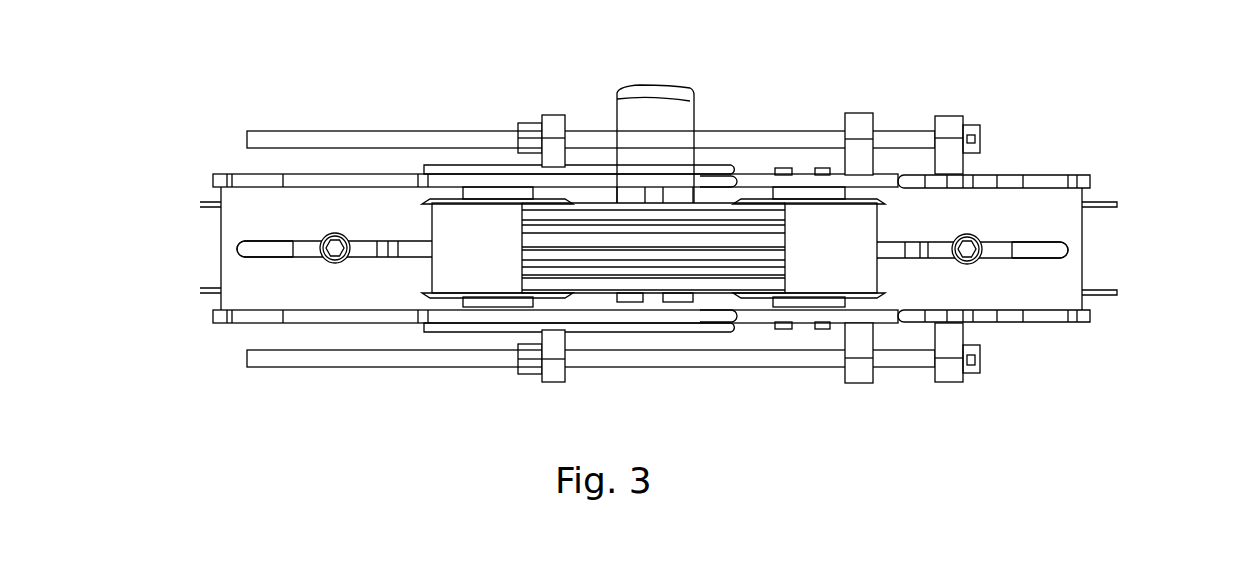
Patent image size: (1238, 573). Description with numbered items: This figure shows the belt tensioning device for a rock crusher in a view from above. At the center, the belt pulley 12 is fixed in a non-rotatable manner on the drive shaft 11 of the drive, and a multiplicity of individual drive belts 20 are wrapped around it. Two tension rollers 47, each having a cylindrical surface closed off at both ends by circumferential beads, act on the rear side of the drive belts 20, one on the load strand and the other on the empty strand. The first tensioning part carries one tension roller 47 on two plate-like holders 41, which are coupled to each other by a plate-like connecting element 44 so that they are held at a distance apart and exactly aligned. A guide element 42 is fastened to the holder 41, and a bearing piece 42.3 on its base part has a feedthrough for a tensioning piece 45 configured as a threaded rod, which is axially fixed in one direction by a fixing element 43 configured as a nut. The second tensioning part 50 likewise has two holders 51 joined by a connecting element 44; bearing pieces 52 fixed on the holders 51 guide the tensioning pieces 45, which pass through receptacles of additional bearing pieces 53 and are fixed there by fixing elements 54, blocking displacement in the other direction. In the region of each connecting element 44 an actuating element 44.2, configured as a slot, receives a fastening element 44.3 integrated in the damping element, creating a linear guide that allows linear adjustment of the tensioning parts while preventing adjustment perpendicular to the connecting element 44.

The drive shaft 11 is at (685, 103).
The belt pulley 12 is at (717, 183).
The drive belt 20 is at (592, 227).
The holder 41 is at (340, 180).
The guide element 42 is at (476, 167).
The bearing piece 42.3 is at (553, 122).
The fixing element 43 is at (535, 127).
The connecting element 44 is at (228, 213).
The actuating element 44.2 is at (243, 247).
The fastening element 44.3 is at (317, 248).
The tensioning piece 45 is at (259, 137).
The tension roller 47 is at (445, 227).
The tensioning part 50 is at (1028, 162).
The holder 51 is at (1060, 176).
The bearing piece 52 is at (857, 148).
The bearing piece 53 is at (947, 122).
The fixing element 54 is at (975, 128).